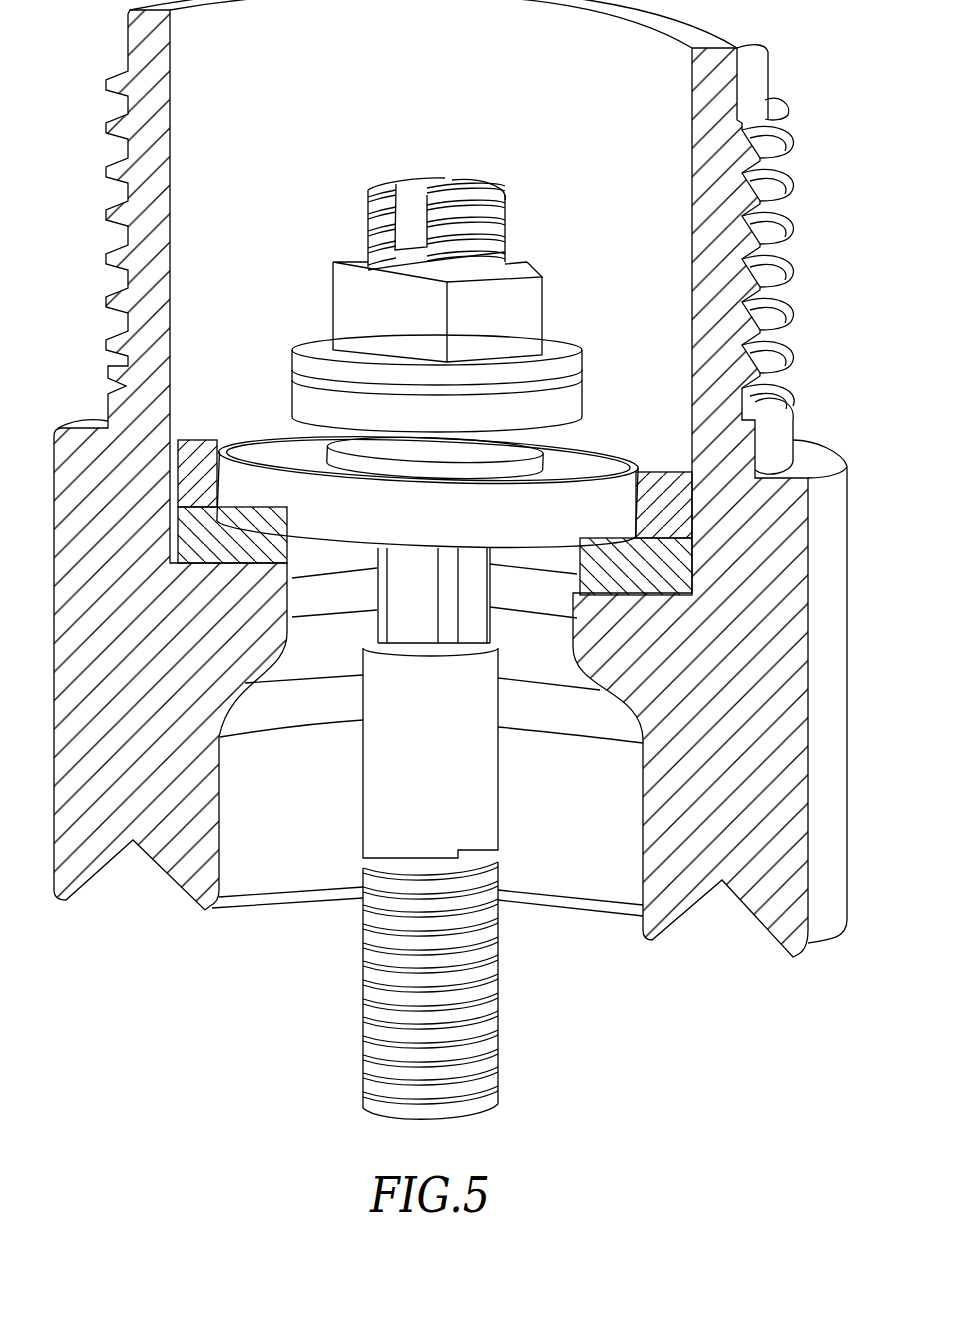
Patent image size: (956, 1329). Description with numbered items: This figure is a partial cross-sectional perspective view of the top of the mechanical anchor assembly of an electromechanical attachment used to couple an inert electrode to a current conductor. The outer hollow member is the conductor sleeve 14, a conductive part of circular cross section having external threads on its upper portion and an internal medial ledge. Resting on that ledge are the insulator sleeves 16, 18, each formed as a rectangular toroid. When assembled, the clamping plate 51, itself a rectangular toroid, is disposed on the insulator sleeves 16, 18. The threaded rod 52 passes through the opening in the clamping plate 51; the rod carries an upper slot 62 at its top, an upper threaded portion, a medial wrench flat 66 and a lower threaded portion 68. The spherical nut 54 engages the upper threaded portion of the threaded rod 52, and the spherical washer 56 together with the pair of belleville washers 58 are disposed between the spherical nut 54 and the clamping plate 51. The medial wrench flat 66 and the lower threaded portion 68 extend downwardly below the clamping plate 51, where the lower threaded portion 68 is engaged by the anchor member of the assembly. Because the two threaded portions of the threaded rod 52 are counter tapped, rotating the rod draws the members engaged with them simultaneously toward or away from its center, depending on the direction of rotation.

The conductor sleeve 14 is at (800, 590).
The insulator sleeve 16 is at (670, 508).
The insulator sleeve 18 is at (645, 590).
The clamping plate 51 is at (437, 517).
The threaded rod 52 is at (455, 175).
The spherical nut 54 is at (368, 290).
The spherical washer 56 is at (298, 398).
The belleville washers 58 is at (357, 448).
The upper slot 62 is at (408, 193).
The medial wrench flat 66 is at (423, 648).
The lower threaded portion 68 is at (495, 1020).